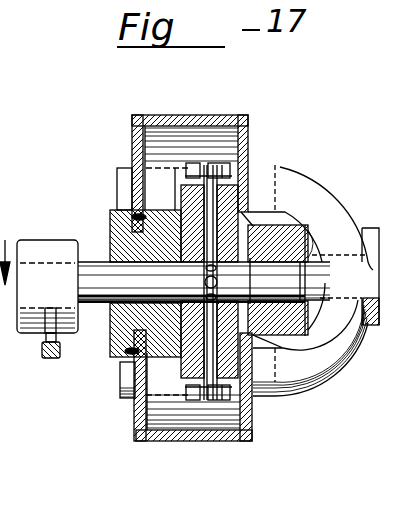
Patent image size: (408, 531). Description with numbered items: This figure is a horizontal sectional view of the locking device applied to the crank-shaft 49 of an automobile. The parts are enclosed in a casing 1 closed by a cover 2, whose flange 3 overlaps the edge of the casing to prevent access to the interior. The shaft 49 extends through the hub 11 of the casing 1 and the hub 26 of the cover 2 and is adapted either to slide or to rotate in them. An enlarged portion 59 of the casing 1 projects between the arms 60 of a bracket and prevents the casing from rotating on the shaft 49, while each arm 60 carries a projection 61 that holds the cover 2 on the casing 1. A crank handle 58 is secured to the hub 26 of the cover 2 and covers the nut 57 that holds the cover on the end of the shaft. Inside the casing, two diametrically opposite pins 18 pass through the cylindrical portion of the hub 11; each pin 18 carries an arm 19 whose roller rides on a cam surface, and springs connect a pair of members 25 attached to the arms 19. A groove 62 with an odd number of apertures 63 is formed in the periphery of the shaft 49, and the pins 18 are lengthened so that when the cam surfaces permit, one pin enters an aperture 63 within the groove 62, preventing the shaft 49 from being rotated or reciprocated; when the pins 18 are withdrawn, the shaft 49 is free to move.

The casing 1 is at (248, 143).
The cover 2 is at (131, 141).
The flange 3 is at (162, 112).
The hub 11 is at (280, 212).
The pins 18 is at (211, 164).
The arm 19 is at (226, 163).
The members 25 is at (182, 187).
The hub 26 is at (114, 336).
The crank-shaft 49 is at (102, 306).
The nut 57 is at (5, 258).
The crank handle 58 is at (47, 299).
The enlarged portion 59 is at (286, 212).
The arms 60 is at (262, 279).
The projection 61 is at (122, 186).
The groove 62 is at (218, 283).
The apertures 63 is at (203, 282).